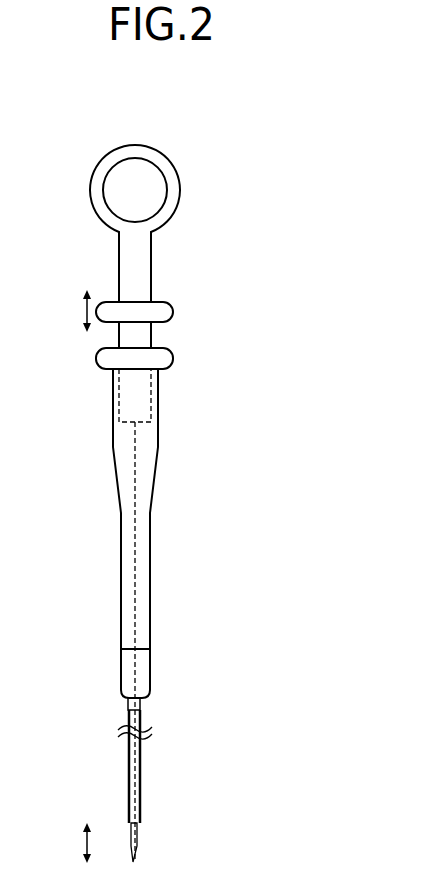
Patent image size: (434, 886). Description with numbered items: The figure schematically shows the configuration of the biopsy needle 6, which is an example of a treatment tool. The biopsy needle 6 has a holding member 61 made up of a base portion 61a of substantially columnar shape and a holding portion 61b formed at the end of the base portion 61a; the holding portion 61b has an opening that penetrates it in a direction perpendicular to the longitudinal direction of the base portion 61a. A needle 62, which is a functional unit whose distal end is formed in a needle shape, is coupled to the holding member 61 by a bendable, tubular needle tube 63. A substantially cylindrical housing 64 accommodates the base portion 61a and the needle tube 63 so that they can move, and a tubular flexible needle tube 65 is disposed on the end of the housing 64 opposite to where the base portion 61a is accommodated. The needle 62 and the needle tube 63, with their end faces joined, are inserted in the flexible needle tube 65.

The biopsy needle 6 is at (139, 129).
The holding member 61 is at (255, 172).
The base portion 61a is at (151, 266).
The holding portion 61b is at (180, 190).
The needle 62 is at (137, 840).
The needle tube 63 is at (135, 470).
The housing 64 is at (158, 392).
The flexible needle tube 65 is at (140, 775).